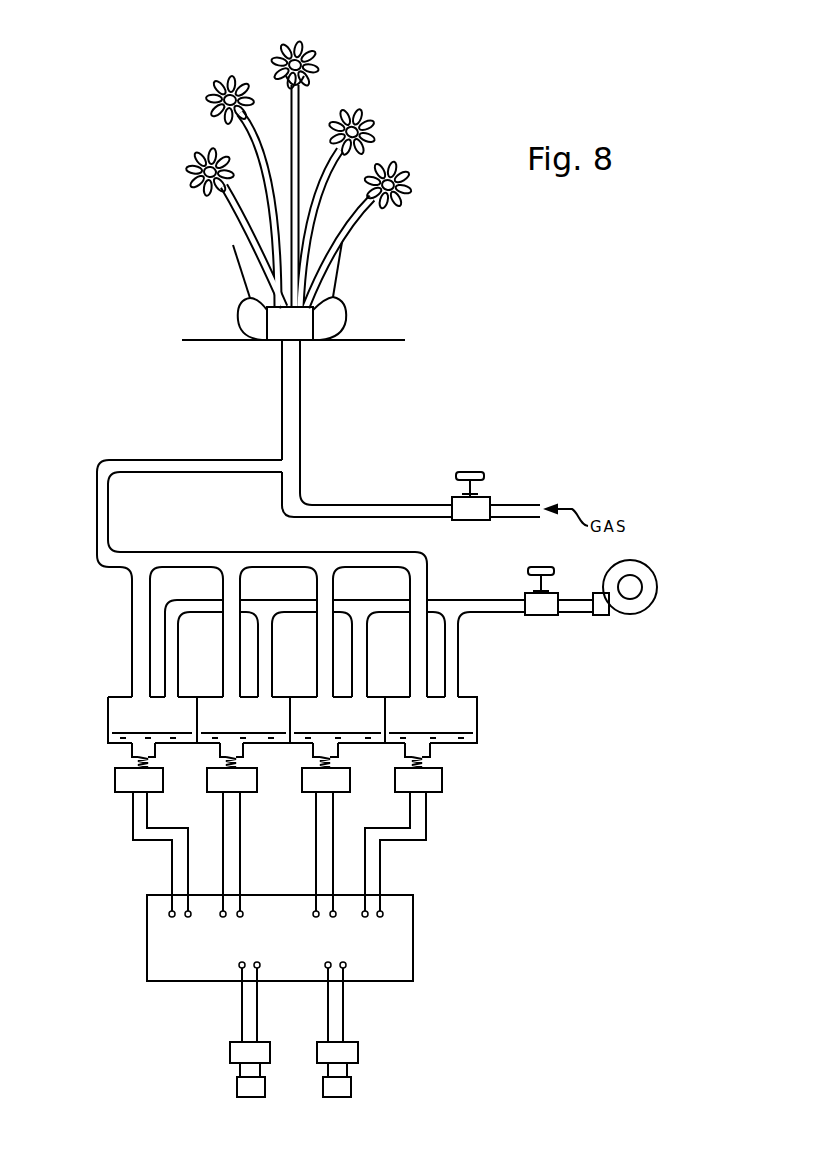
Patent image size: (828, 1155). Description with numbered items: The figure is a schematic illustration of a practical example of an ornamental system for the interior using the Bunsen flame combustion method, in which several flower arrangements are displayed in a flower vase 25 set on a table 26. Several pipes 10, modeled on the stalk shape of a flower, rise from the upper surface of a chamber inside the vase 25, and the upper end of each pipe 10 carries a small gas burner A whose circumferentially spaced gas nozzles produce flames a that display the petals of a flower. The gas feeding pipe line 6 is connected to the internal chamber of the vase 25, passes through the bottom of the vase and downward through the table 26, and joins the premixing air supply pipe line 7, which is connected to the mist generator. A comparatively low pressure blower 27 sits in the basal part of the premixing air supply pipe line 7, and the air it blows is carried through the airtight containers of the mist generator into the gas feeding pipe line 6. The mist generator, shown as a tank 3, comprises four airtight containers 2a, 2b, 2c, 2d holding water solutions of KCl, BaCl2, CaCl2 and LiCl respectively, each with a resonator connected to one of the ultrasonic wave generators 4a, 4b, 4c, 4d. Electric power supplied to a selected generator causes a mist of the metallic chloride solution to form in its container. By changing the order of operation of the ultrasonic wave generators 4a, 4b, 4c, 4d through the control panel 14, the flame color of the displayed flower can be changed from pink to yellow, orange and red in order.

The flames a is at (300, 45).
The gas burner A is at (301, 67).
The pipes 10 is at (237, 203).
The flower vase 25 is at (340, 262).
The table 26 is at (392, 340).
The gas feeding pipe line 6 is at (302, 400).
The premixing air supply pipe line 7 is at (97, 518).
The blower 27 is at (645, 600).
The tank 3 is at (103, 731).
The airtight container 2a is at (142, 706).
The airtight container 2b is at (212, 700).
The airtight container 2c is at (308, 700).
The airtight container 2d is at (402, 700).
The ultrasonic wave generator 4a is at (151, 827).
The ultrasonic wave generator 4b is at (232, 827).
The ultrasonic wave generator 4c is at (326, 827).
The ultrasonic wave generator 4d is at (403, 827).
The control panel 14 is at (413, 950).